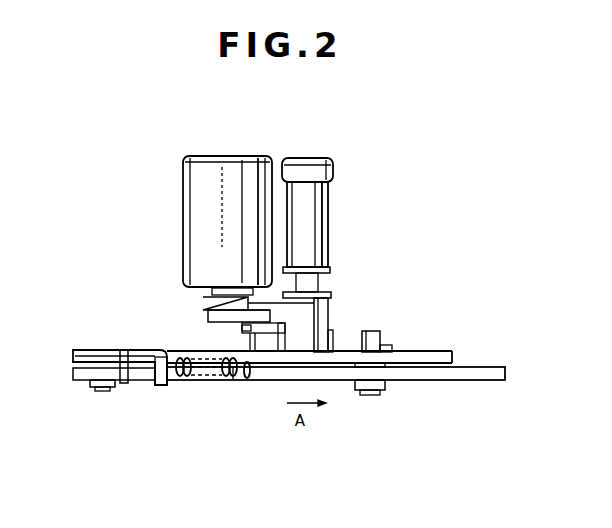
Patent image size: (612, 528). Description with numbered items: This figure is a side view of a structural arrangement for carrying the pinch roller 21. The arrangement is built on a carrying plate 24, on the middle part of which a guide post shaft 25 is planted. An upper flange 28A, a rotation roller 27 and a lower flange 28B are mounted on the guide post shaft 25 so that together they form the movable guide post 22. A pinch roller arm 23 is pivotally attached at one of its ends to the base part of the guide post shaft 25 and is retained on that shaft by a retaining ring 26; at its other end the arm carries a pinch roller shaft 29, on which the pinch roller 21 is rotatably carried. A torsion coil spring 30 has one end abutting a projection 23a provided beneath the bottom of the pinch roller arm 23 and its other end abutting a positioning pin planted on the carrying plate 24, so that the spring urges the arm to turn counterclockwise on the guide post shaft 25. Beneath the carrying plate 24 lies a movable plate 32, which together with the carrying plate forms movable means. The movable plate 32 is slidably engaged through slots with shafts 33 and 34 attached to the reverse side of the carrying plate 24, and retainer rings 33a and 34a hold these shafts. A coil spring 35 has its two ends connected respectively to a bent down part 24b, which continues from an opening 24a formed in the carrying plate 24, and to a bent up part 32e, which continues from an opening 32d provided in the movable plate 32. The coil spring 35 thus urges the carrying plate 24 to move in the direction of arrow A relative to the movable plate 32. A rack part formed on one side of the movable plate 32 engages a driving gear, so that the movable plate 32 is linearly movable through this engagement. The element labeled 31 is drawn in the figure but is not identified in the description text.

The pinch roller 21 is at (205, 165).
The movable guide post 22 is at (328, 153).
The upper flange 28A is at (336, 170).
The rotation roller 27 is at (330, 215).
The lower flange 28B is at (333, 250).
The guide post shaft 25 is at (328, 277).
The retaining ring 26 is at (332, 295).
The pinch roller shaft 29 is at (212, 292).
The pinch roller arm 23 is at (205, 306).
The projection 23a is at (258, 330).
The carrying plate 24 is at (441, 351).
The opening 24a is at (162, 348).
The bent down part 24b is at (160, 386).
The movable plate 32 is at (488, 368).
The retainer ring 33a is at (88, 383).
The shaft 33 is at (103, 392).
The coil spring 35 is at (214, 383).
The bent up part 32e is at (247, 383).
The opening 32d is at (233, 383).
The torsion coil spring 30 is at (342, 328).
The stop 31 is at (392, 342).
The shaft 34 is at (370, 393).
The retainer ring 34a is at (385, 391).